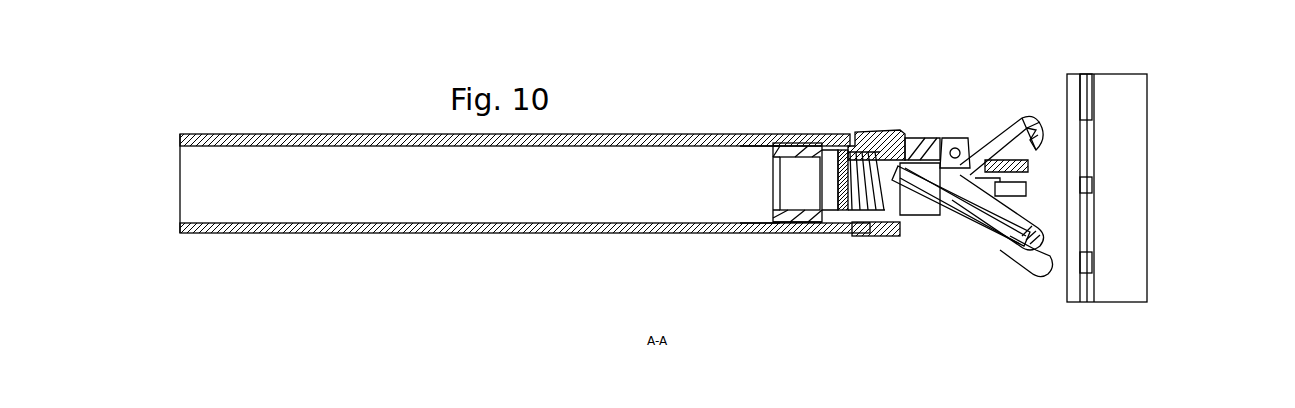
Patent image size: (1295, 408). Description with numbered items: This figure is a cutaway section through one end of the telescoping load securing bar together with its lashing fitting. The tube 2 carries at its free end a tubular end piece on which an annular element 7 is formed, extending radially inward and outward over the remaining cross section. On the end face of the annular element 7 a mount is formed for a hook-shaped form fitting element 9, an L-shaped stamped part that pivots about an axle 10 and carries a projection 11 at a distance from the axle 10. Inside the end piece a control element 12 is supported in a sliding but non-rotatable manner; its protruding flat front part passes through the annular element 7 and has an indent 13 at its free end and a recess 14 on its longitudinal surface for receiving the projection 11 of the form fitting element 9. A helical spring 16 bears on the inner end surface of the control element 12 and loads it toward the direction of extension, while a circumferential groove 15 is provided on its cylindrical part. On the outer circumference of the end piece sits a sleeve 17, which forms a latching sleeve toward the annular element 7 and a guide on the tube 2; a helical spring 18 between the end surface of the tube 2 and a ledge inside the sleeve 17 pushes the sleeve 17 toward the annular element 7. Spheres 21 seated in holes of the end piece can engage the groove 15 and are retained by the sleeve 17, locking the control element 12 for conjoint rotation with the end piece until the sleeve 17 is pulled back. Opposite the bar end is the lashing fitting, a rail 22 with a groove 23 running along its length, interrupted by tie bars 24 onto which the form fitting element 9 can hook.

The tube 2 is at (700, 135).
The annular element 7 is at (955, 136).
The hook-shaped form fitting element 9 is at (1000, 145).
The axle 10 is at (965, 140).
The projection 11 is at (1030, 163).
The control element 12 is at (934, 199).
The indent 13 is at (1030, 187).
The recess 14 is at (1030, 228).
The circumferential groove 15 is at (926, 140).
The helical spring 16 is at (836, 142).
The sleeve 17 is at (903, 130).
The helical spring 18 is at (886, 237).
The sphere 21 is at (872, 145).
The rail 22 is at (1137, 128).
The groove 23 is at (1076, 226).
The tie bar 24 is at (1090, 180).